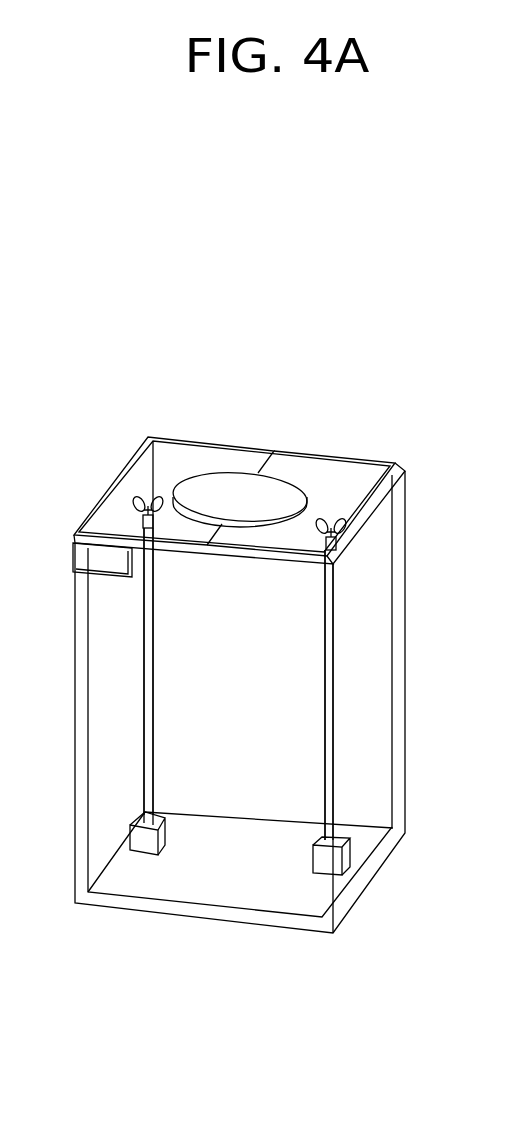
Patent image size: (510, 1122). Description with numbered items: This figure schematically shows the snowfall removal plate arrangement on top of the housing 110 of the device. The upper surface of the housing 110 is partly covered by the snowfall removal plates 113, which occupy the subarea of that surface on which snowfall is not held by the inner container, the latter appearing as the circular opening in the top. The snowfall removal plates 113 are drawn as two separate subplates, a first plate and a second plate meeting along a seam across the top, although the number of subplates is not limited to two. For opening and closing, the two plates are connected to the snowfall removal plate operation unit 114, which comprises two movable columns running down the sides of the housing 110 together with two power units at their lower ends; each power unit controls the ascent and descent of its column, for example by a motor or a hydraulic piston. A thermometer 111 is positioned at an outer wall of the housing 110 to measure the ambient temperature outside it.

The housing 110 is at (182, 437).
The thermometer 111 is at (102, 550).
The snowfall removal plates 113 is at (423, 302).
The snowfall removal plate operation unit 114 is at (428, 1005).